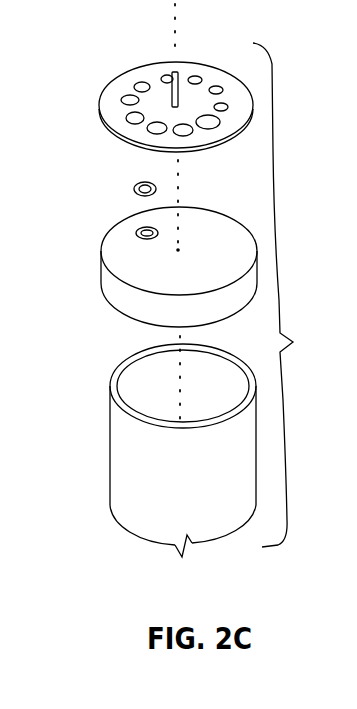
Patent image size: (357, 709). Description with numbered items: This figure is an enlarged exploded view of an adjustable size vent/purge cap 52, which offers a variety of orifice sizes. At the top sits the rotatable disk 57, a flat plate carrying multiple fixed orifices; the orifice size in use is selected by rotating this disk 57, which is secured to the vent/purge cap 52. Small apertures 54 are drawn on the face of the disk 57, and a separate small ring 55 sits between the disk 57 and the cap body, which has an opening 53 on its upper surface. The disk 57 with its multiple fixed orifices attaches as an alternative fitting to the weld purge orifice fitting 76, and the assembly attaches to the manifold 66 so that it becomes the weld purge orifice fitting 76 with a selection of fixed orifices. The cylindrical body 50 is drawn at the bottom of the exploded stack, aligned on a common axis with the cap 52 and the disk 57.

The rotatable disk 57 is at (150, 83).
The apertures 54 is at (126, 116).
The ring gasket 55 is at (134, 187).
The opening 53 is at (137, 231).
The vent/purge cap 52 is at (165, 277).
The weld purge orifice fitting 76 is at (165, 277).
The cylindrical container 50 is at (157, 450).
The manifold 66 is at (115, 455).